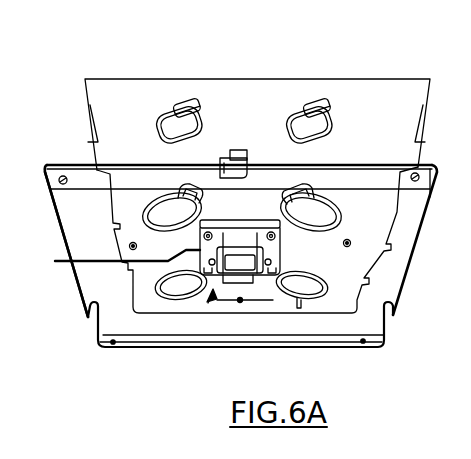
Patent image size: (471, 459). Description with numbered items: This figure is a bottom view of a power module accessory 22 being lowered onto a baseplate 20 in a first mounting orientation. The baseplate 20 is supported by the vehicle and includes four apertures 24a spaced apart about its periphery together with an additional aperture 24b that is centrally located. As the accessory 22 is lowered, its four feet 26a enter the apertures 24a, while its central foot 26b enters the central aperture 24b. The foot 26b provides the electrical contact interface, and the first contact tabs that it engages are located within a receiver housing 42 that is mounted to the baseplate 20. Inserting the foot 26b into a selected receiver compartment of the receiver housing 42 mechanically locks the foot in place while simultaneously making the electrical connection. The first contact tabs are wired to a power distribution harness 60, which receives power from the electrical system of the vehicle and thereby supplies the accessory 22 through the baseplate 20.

The baseplate 20 is at (72, 164).
The accessory 22 is at (375, 90).
The apertures 24a is at (147, 200).
The additional aperture 24b is at (213, 222).
The feet 26a is at (305, 207).
The foot 26b is at (250, 161).
The receiver housing 42 is at (208, 303).
The power distribution harness 60 is at (83, 292).